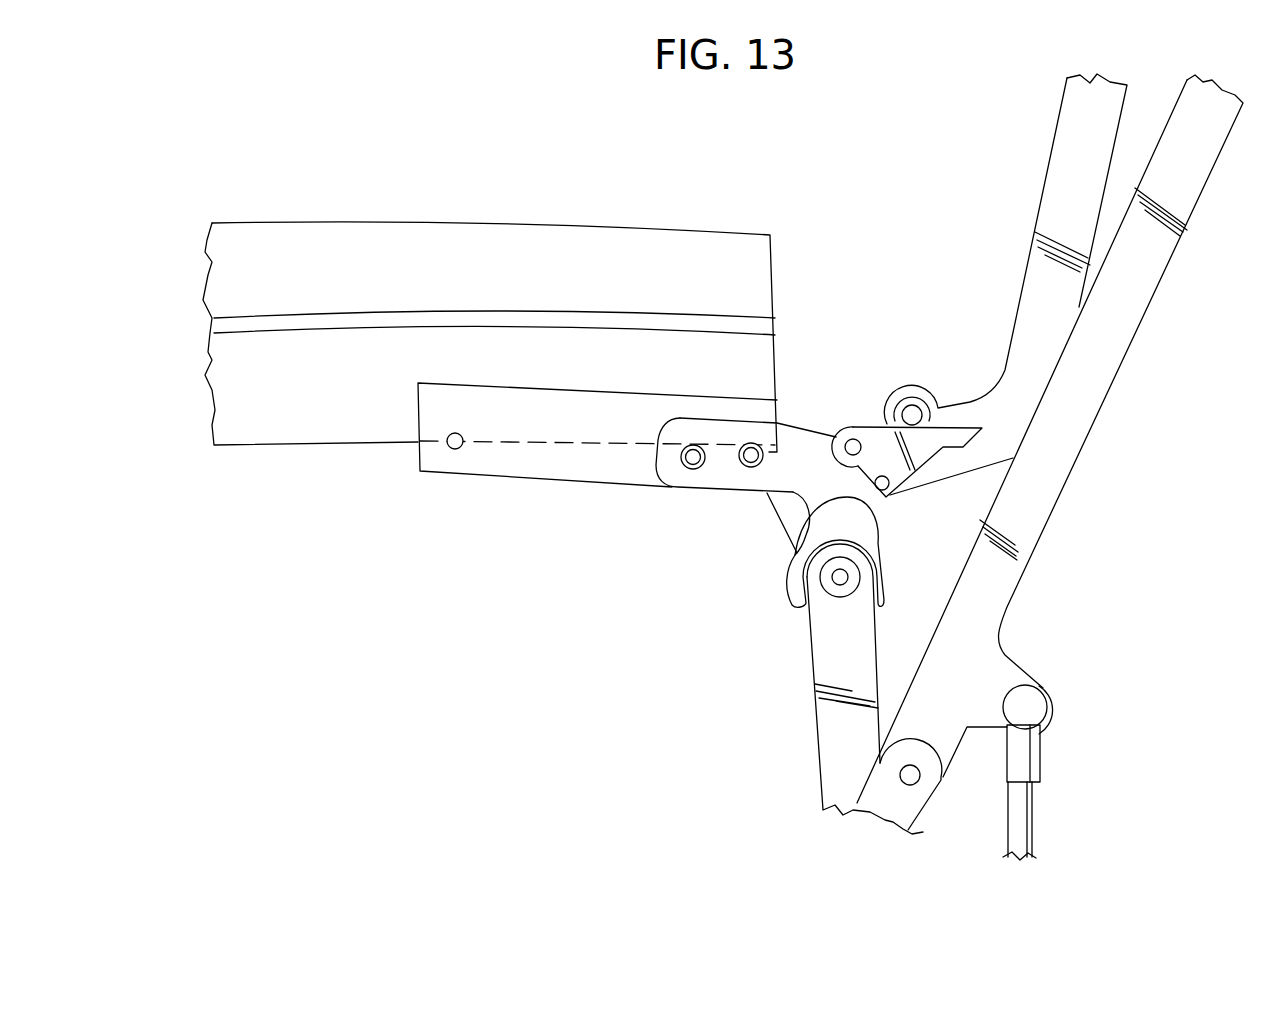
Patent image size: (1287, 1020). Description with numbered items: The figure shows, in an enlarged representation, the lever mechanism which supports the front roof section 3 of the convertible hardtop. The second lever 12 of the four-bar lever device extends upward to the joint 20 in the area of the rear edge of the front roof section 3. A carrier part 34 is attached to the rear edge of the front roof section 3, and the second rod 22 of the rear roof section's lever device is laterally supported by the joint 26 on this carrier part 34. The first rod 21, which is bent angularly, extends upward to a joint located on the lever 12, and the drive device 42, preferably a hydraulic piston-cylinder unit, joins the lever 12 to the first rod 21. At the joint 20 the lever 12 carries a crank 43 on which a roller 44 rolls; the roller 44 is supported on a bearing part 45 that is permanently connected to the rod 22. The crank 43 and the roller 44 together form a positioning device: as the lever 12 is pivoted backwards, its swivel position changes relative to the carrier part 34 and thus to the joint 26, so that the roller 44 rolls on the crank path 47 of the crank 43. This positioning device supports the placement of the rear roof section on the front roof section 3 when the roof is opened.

The front roof section 3 is at (431, 212).
The second lever 12 is at (837, 652).
The joint 20 is at (832, 578).
The first rod 21 is at (1143, 273).
The second rod 22 is at (1067, 140).
The joint 26 is at (890, 492).
The carrier part 34 is at (783, 466).
The drive device 42 is at (1027, 773).
The crank 43 is at (823, 540).
The roller 44 is at (850, 427).
The bearing part 45 is at (930, 423).
The crank path 47 is at (824, 493).